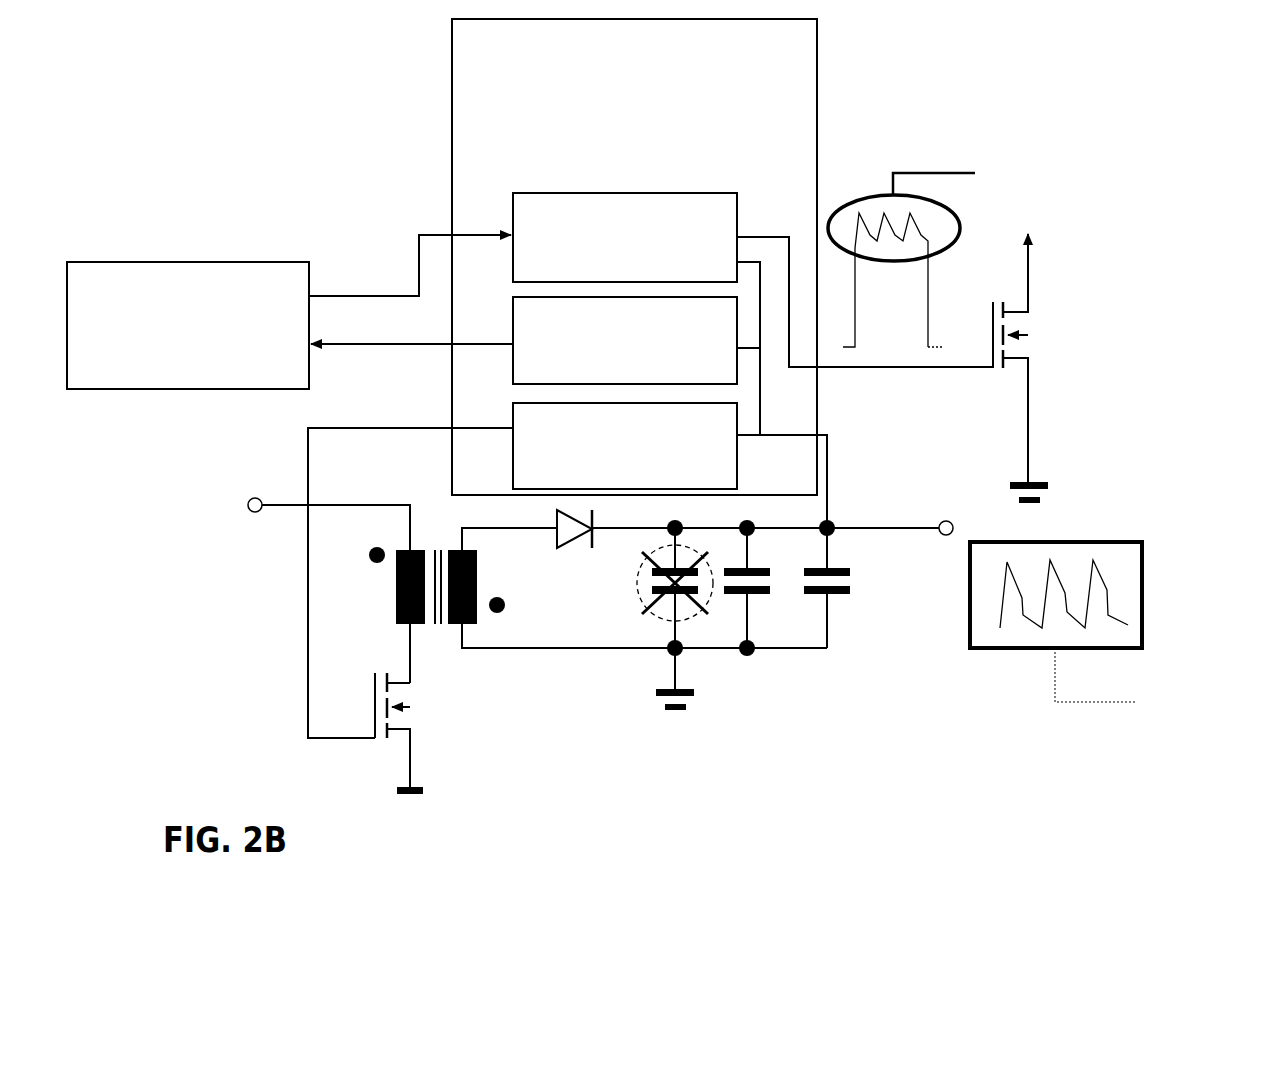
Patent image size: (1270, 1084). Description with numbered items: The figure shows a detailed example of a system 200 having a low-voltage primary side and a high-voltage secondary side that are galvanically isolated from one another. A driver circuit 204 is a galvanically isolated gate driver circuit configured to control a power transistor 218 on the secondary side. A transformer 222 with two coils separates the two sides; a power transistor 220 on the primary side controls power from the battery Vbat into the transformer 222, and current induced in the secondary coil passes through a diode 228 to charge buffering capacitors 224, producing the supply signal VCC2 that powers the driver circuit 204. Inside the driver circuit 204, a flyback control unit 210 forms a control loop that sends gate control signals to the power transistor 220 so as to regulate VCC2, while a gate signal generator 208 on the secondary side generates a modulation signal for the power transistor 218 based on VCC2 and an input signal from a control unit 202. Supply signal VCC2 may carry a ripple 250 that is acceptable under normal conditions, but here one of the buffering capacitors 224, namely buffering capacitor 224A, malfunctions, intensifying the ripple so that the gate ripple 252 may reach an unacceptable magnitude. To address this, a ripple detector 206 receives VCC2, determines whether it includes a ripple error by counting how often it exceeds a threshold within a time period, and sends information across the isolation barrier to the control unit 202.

The system 200 is at (1108, 80).
The control unit 202 is at (188, 325).
The driver circuit 204 is at (633, 192).
The ripple detector 206 is at (644, 378).
The gate signal generator 208 is at (643, 276).
The flyback control unit 210 is at (644, 483).
The power transistor 218 is at (992, 323).
The power transistor 220 is at (400, 706).
The transformer 222 is at (443, 632).
The buffering capacitors 224 is at (714, 608).
The buffering capacitor 224A is at (658, 624).
The diode 228 is at (560, 549).
The ripple 250 is at (1113, 649).
The gate ripple 252 is at (997, 255).